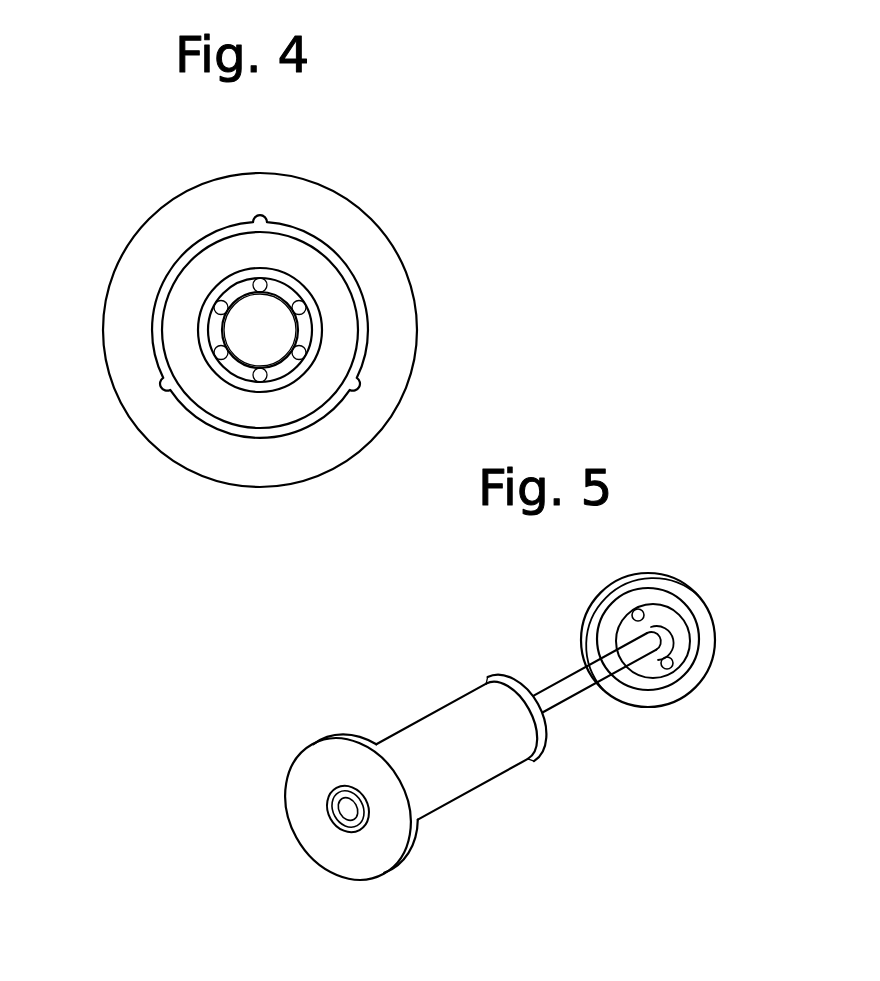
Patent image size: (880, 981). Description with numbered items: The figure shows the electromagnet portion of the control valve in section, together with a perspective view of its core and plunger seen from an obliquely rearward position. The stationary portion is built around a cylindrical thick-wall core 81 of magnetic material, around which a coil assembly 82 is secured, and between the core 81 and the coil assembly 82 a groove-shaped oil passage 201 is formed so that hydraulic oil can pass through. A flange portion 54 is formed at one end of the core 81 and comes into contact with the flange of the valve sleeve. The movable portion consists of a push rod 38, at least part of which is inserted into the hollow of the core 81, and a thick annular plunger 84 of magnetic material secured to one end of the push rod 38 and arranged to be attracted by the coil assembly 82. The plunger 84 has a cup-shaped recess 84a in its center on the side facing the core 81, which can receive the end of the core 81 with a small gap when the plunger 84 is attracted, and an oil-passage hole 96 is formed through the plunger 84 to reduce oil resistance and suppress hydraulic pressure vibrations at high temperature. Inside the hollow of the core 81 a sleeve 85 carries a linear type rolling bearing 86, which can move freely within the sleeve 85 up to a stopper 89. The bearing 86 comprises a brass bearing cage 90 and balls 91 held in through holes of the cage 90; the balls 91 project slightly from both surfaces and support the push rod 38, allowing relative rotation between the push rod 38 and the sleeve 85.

In FIG. 4, the push rod 38 is at (248, 355).
In FIG. 5, the push rod 38 is at (600, 680).
In FIG. 5, the flange portion 54 is at (398, 862).
In FIG. 4, the core 81 is at (203, 280).
In FIG. 5, the core 81 is at (473, 785).
In FIG. 4, the coil assembly 82 is at (178, 224).
In FIG. 5, the plunger 84 is at (712, 606).
In FIG. 5, the cup-shaped recess 84a is at (613, 633).
In FIG. 4, the sleeve 85 is at (207, 303).
In FIG. 4, the linear type rolling bearing 86 is at (207, 327).
In FIG. 5, the stopper 89 is at (667, 643).
In FIG. 4, the bearing cage 90 is at (213, 338).
In FIG. 4, the balls 91 is at (258, 382).
In FIG. 5, the oil-passage hole 96 is at (676, 667).
In FIG. 4, the oil passage 201 is at (263, 214).